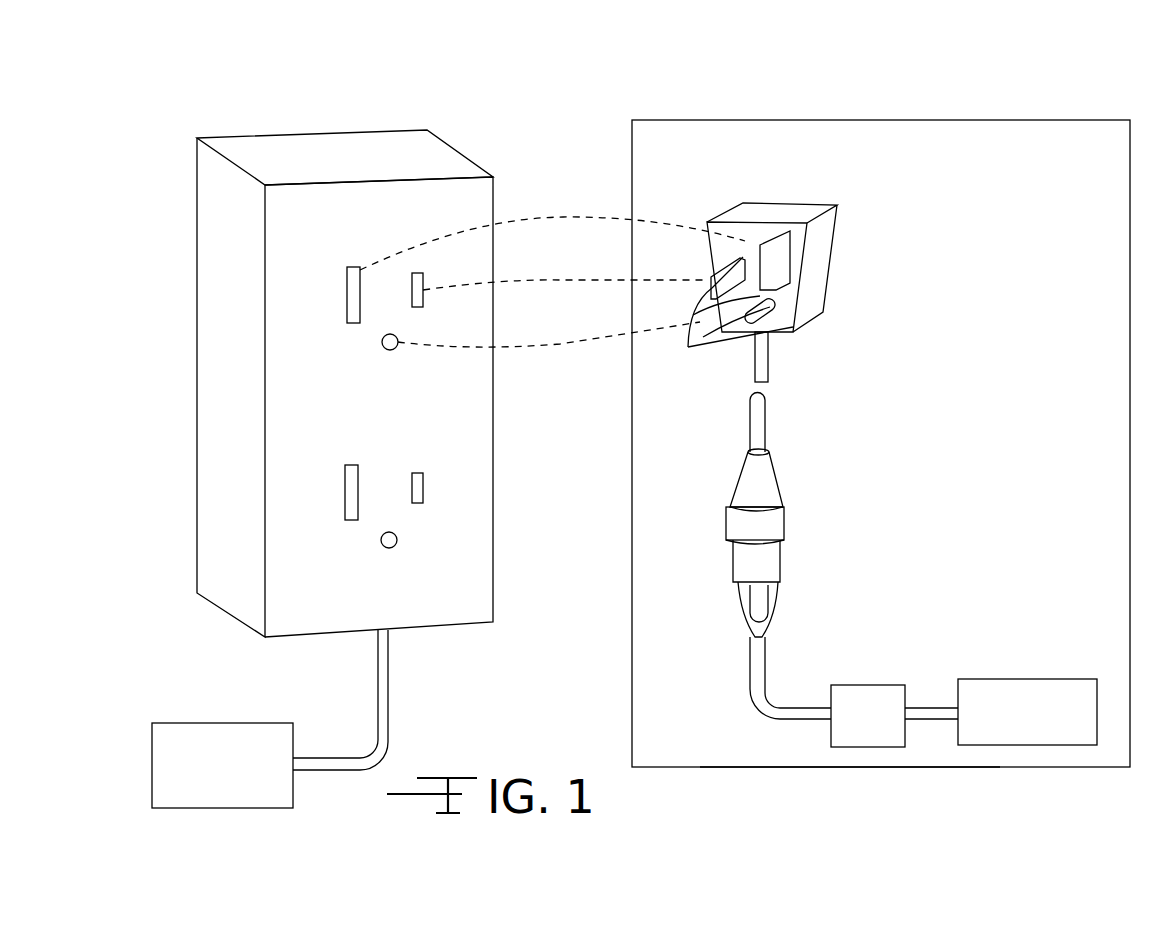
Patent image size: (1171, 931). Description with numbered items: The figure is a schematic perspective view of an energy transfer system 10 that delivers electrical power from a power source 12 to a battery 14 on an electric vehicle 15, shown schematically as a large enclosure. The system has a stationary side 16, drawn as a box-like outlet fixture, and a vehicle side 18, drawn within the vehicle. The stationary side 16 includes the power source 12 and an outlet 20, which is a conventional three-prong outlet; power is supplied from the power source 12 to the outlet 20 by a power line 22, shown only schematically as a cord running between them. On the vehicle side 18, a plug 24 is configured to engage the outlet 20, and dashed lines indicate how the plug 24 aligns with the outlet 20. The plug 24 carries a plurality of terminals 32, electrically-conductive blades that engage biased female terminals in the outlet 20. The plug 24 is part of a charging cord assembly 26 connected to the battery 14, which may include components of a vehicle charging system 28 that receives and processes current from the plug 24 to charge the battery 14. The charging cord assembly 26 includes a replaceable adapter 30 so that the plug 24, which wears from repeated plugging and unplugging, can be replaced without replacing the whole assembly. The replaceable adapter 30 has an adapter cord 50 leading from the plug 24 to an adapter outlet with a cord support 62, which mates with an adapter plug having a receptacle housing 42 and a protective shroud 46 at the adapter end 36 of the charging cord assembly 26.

The energy transfer system 10 is at (819, 106).
The power source 12 is at (270, 722).
The battery 14 is at (1013, 679).
The electric vehicle 15 is at (825, 768).
The stationary side 16 is at (291, 108).
The vehicle side 18 is at (955, 111).
The outlet 20 is at (346, 153).
The power line 22 is at (388, 675).
The plug 24 is at (777, 203).
The charging cord assembly 26 is at (662, 660).
The vehicle charging system 28 is at (860, 685).
The replaceable adapter 30 is at (877, 331).
The terminals 32 is at (733, 320).
The adapter end 36 is at (762, 696).
The receptacle housing 42 is at (760, 595).
The shroud 46 is at (757, 556).
The adapter cord 50 is at (760, 412).
The cord support 62 is at (764, 480).